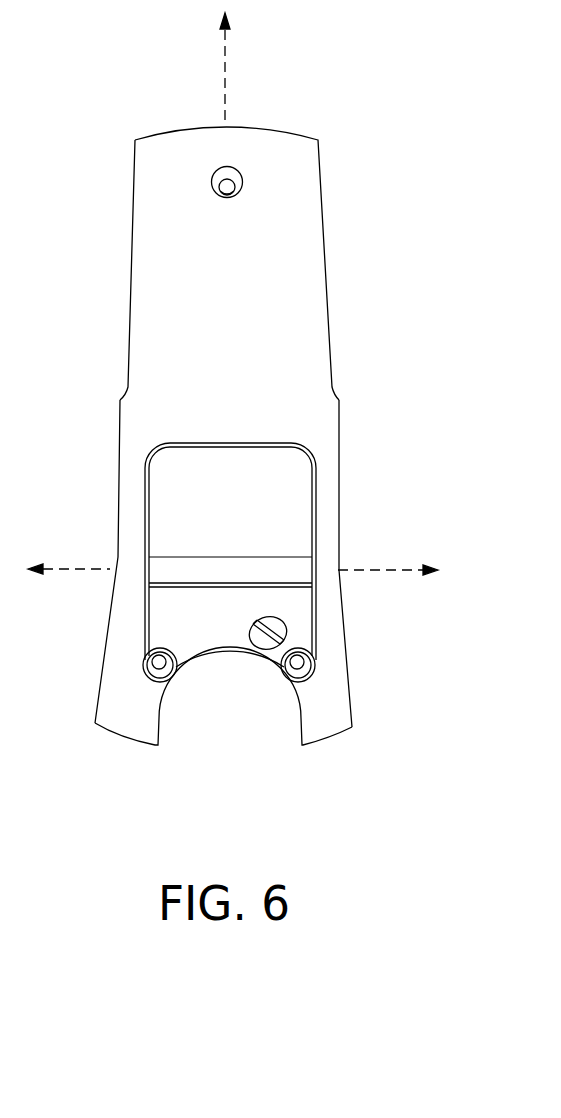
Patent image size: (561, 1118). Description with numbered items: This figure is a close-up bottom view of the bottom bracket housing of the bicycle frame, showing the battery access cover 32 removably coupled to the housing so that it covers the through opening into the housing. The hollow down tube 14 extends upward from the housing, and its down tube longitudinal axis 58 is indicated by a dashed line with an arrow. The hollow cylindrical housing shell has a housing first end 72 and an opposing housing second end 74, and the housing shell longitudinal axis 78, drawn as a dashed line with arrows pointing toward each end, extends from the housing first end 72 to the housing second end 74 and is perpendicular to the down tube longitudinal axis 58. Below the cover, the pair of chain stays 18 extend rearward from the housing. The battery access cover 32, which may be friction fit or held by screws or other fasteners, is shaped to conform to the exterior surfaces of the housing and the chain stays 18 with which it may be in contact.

The down tube 14 is at (288, 292).
The chain stays 18 is at (115, 722).
The battery access cover 32 is at (290, 525).
The down tube longitudinal axis 58 is at (225, 79).
The housing first end 72 is at (132, 550).
The housing second end 74 is at (328, 547).
The housing shell longitudinal axis 78 is at (78, 572).